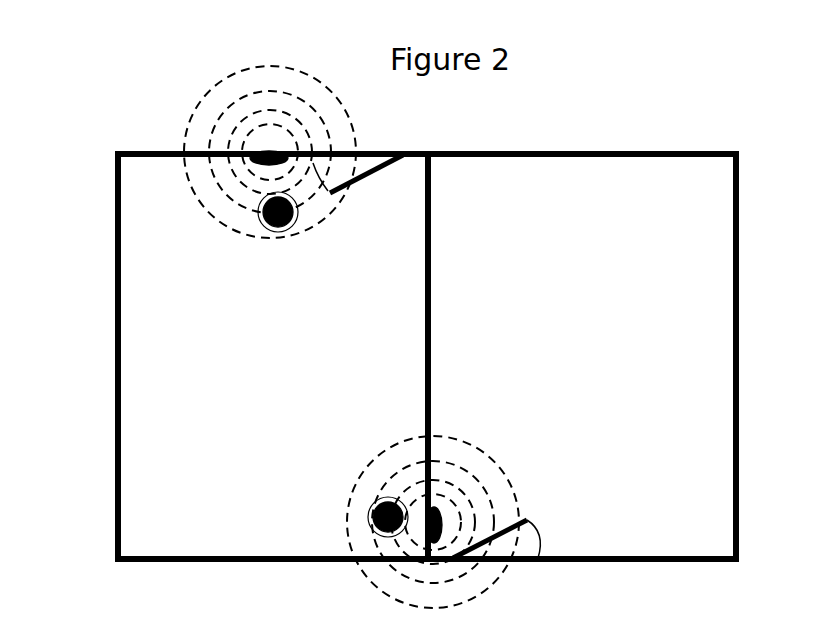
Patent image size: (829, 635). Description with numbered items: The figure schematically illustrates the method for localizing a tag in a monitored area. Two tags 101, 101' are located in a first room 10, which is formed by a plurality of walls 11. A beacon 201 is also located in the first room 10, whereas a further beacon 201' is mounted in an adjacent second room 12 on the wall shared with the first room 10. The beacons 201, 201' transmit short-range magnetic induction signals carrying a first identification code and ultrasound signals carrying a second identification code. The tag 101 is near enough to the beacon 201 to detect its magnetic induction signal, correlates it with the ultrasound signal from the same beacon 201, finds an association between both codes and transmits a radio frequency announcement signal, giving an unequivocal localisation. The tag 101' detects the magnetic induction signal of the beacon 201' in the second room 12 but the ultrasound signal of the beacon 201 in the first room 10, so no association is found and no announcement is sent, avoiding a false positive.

The first room 10 is at (213, 405).
The walls 11 is at (432, 315).
The second room 12 is at (638, 215).
The tag 101 is at (165, 229).
The beacon 201 is at (252, 143).
The tag 101' is at (283, 549).
The beacon 201' is at (453, 492).